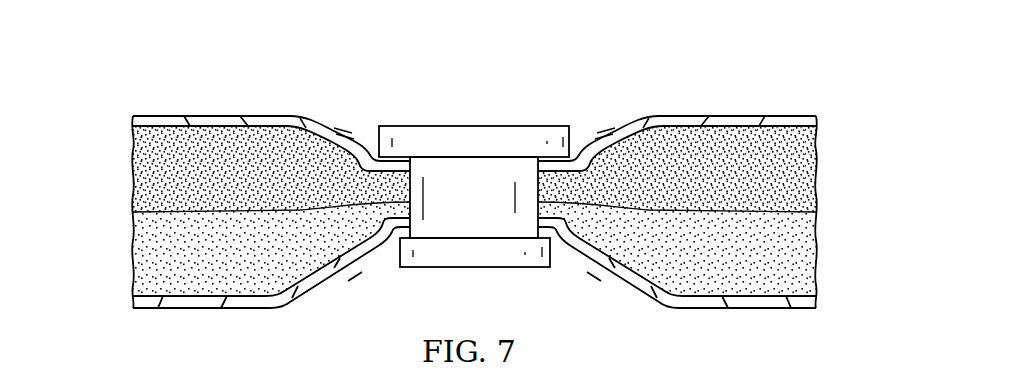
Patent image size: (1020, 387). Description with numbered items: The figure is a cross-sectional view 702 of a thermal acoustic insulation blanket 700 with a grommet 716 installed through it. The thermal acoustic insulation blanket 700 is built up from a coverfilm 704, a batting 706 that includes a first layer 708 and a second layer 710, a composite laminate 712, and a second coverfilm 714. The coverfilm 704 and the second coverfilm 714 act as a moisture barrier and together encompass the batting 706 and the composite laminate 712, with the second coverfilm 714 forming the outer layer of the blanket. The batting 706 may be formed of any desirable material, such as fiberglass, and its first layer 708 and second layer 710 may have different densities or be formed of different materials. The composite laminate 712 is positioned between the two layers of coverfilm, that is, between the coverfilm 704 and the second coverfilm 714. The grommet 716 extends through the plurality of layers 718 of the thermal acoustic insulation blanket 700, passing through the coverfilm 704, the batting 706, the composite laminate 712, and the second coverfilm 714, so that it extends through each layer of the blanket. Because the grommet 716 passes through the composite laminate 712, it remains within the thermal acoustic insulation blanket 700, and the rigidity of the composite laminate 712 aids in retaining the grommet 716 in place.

The thermal acoustic insulation blanket 700 is at (206, 91).
The view 702 is at (614, 72).
The coverfilm 704 is at (736, 118).
The batting 706 is at (112, 226).
The first layer 708 is at (818, 172).
The second layer 710 is at (816, 256).
The composite laminate 712 is at (210, 297).
The second coverfilm 714 is at (738, 300).
The grommet 716 is at (498, 211).
The plurality of layers 718 is at (356, 112).